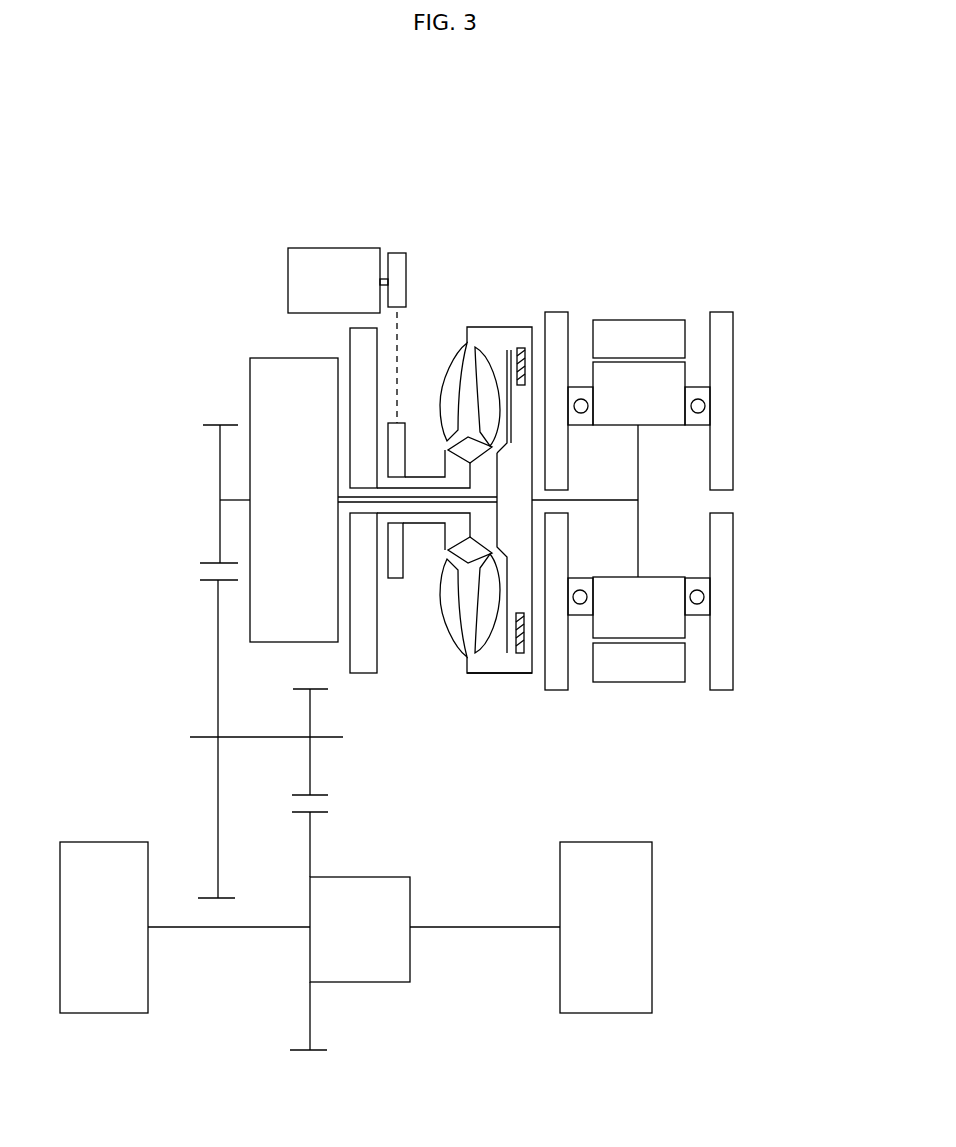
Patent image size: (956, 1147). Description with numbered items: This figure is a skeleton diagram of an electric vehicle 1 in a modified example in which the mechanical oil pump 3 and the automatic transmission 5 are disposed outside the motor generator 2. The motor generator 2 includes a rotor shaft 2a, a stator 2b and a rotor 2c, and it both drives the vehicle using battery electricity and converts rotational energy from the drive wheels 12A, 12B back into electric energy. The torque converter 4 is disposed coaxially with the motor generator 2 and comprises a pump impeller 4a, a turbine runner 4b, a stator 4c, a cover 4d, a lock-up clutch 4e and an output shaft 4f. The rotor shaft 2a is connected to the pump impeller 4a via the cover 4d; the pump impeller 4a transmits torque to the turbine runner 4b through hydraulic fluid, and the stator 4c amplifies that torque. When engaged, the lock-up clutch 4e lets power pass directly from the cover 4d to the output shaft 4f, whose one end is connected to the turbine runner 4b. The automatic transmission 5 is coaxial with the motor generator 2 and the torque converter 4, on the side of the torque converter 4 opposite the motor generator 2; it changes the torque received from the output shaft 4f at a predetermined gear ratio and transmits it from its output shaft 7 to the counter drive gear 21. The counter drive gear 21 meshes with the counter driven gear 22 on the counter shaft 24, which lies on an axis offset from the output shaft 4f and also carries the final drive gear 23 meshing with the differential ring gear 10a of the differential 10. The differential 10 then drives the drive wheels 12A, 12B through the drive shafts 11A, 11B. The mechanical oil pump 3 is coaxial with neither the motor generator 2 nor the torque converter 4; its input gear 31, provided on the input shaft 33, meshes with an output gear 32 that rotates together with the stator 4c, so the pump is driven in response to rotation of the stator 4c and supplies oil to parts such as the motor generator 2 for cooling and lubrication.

The electric vehicle 1 is at (596, 196).
The motor generator 2 is at (665, 285).
The rotor shaft 2a is at (622, 497).
The stator 2b is at (618, 317).
The rotor 2c is at (688, 377).
The mechanical oil pump 3 is at (330, 248).
The torque converter 4 is at (502, 307).
The pump impeller 4a is at (455, 330).
The turbine runner 4b is at (490, 327).
The stator 4c is at (458, 590).
The cover 4d is at (497, 677).
The lock-up clutch 4e is at (518, 327).
The output shaft 4f is at (418, 503).
The automatic transmission 5 is at (268, 358).
The output shaft 7 is at (248, 465).
The differential 10 is at (378, 983).
The differential ring gear 10a is at (294, 813).
The drive shaft 11A is at (485, 930).
The drive shaft 11B is at (208, 930).
The drive wheel 12A is at (603, 1013).
The drive wheel 12B is at (98, 1013).
The counter drive gear 21 is at (212, 423).
The counter driven gear 22 is at (212, 582).
The final drive gear 23 is at (320, 793).
The counter shaft 24 is at (328, 737).
The input gear 31 is at (400, 253).
The output gear 32 is at (407, 447).
The input shaft 33 is at (392, 253).